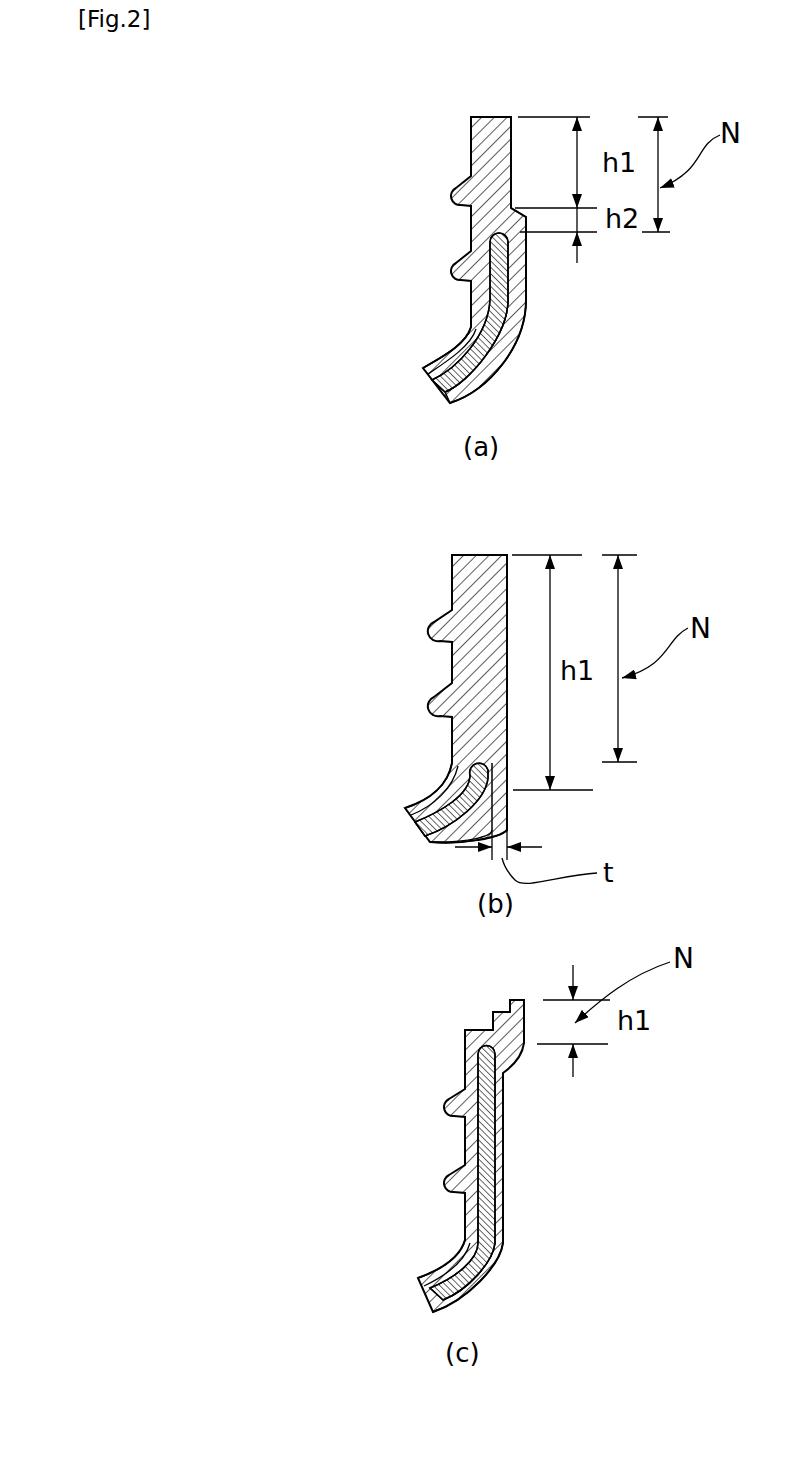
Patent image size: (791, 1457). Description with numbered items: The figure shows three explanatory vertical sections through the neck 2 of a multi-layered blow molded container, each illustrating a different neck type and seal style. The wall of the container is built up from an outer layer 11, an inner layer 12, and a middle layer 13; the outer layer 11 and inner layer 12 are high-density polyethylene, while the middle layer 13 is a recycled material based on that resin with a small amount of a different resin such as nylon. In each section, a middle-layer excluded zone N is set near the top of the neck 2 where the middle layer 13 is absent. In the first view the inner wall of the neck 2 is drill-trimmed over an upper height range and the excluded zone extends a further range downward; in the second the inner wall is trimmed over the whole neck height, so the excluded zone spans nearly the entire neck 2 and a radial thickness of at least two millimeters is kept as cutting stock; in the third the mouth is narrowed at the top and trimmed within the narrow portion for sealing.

The neck 2 is at (487, 190).
The outer layer 11 is at (483, 315).
The inner layer 12 is at (510, 343).
The middle layer 13 is at (522, 297).